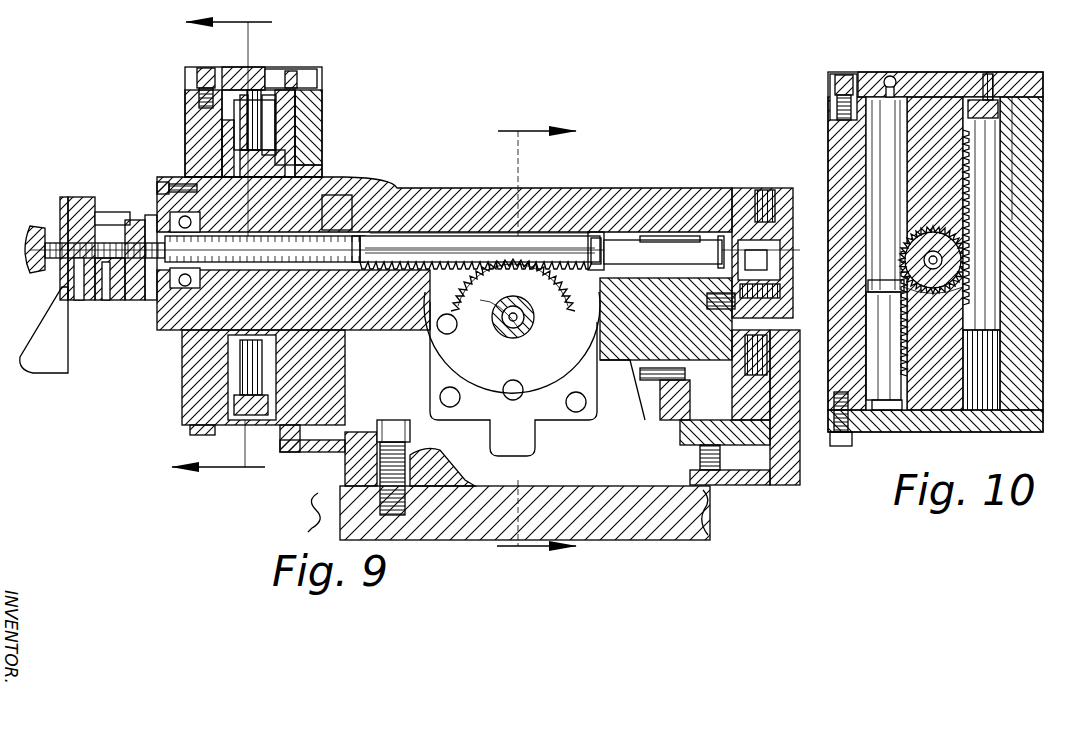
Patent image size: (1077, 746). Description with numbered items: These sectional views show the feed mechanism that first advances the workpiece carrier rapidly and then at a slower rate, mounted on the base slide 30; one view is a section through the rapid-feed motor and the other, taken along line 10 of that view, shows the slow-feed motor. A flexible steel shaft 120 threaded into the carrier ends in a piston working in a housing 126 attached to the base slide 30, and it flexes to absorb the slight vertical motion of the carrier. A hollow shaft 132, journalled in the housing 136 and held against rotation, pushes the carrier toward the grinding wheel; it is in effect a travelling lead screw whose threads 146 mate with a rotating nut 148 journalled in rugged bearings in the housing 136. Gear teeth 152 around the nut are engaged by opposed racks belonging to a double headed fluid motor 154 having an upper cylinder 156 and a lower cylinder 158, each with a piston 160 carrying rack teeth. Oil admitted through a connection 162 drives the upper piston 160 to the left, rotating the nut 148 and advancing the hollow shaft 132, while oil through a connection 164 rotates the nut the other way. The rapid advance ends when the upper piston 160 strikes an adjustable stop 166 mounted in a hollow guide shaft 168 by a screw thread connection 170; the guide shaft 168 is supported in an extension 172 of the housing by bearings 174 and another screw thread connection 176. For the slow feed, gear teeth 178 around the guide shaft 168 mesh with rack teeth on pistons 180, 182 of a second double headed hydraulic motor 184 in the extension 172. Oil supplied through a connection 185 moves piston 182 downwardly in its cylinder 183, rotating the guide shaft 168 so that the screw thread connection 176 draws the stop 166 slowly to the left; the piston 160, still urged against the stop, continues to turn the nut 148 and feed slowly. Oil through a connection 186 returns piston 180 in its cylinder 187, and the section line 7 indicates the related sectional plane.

In FIG. 9, the section line 7- 7 is at (523, 339).
In FIG. 9, the section line 10— 10 is at (239, 245).
In FIG. 9, the base slide 30 is at (305, 502).
In FIG. 9, the shaft 120 is at (512, 336).
In FIG. 9, the housing 126 is at (543, 392).
In FIG. 9, the hollow shaft 132 is at (502, 308).
In FIG. 9, the housing 136 is at (452, 200).
In FIG. 9, the threads 146 is at (555, 320).
In FIG. 9, the rotating nut 148 is at (562, 340).
In FIG. 9, the gear teeth 152 is at (588, 312).
In FIG. 9, the double headed fluid motor 154 is at (543, 248).
In FIG. 9, the upper cylinder 156 is at (667, 237).
In FIG. 9, the lower cylinder 158 is at (672, 415).
In FIG. 9, the piston 160 is at (468, 245).
In FIG. 9, the connection 162 is at (787, 284).
In FIG. 9, the connection 164 is at (797, 470).
In FIG. 9, the adjustable stop 166 is at (363, 235).
In FIG. 10, the adjustable stop 166 is at (965, 228).
In FIG. 9, the hollow guide shaft 168 is at (147, 290).
In FIG. 9, the screw thread connection 170 is at (94, 290).
In FIG. 9, the extension 172 is at (335, 215).
In FIG. 10, the extension 172 is at (830, 132).
In FIG. 9, the bearings 174 is at (173, 330).
In FIG. 9, the screw thread connection 176 is at (318, 182).
In FIG. 9, the gear teeth 178 is at (240, 245).
In FIG. 10, the gear teeth 178 is at (942, 292).
In FIG. 10, the piston 180 is at (890, 362).
In FIG. 9, the piston 182 is at (270, 150).
In FIG. 10, the piston 182 is at (987, 287).
In FIG. 9, the cylinder 183 is at (290, 118).
In FIG. 10, the cylinder 183 is at (1012, 114).
In FIG. 10, the second double headed hydraulic motor 184 is at (946, 86).
In FIG. 9, the connection 185 is at (293, 72).
In FIG. 10, the connection 186 is at (890, 74).
In FIG. 10, the cylinder 187 is at (867, 152).